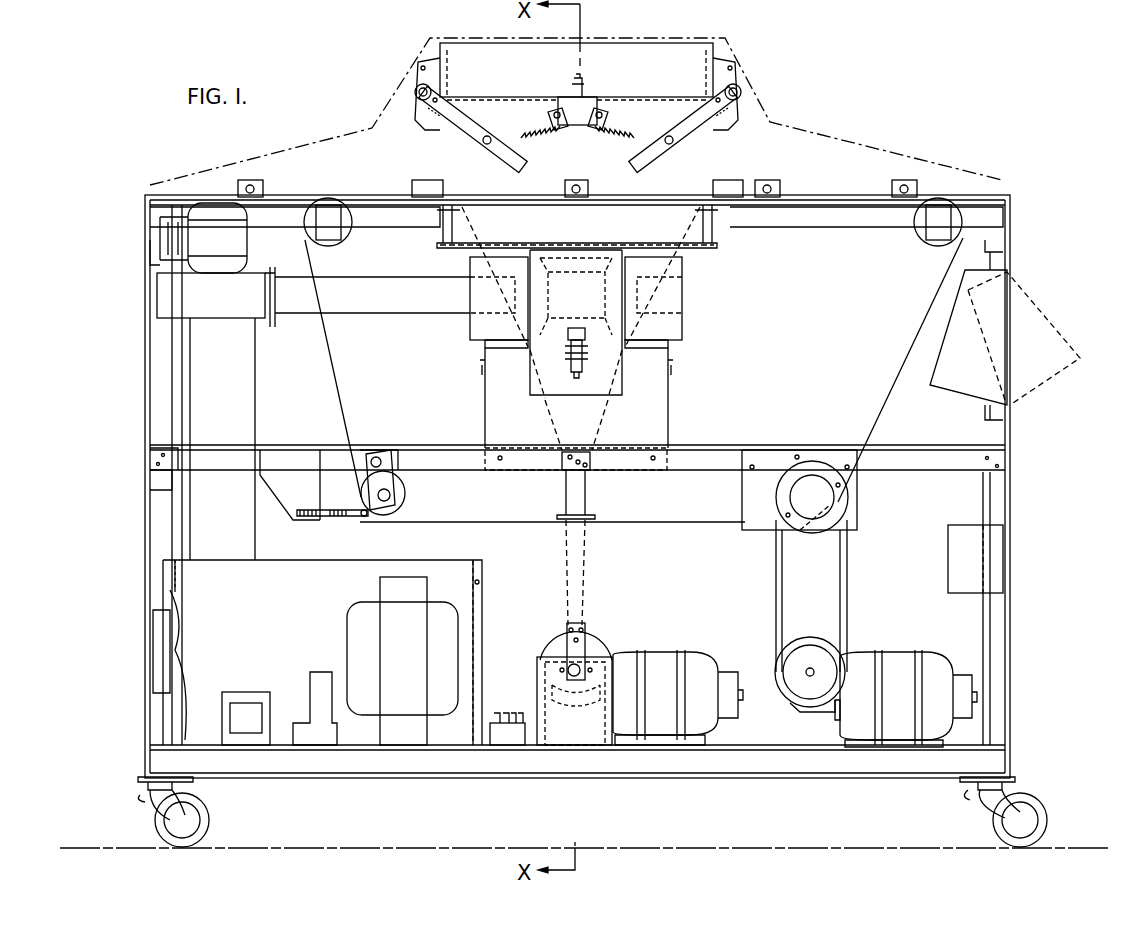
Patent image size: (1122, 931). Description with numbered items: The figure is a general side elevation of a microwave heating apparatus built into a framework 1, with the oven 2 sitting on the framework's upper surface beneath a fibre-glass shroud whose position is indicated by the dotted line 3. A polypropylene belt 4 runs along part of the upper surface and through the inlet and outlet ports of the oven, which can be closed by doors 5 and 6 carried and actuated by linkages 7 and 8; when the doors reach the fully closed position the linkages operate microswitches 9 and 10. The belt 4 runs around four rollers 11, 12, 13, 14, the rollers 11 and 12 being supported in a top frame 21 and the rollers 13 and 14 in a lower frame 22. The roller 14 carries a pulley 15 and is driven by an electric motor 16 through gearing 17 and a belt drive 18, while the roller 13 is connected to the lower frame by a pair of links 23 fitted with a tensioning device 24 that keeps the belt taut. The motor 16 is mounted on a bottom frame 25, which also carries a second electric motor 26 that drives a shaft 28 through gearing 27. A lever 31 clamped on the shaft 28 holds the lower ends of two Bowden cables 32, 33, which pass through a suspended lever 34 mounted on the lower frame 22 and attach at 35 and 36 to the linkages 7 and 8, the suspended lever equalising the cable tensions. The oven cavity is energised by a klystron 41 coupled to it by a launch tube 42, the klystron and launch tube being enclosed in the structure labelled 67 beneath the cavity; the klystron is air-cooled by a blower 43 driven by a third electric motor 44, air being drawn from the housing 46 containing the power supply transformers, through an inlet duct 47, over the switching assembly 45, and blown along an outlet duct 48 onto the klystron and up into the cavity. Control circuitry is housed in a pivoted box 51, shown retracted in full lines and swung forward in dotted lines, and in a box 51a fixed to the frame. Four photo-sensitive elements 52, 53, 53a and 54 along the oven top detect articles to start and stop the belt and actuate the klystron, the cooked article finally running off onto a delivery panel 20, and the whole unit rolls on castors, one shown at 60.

The framework 1 is at (1010, 552).
The oven 2 is at (713, 50).
The dotted line 3 is at (856, 162).
The polypropylene belt 4 is at (864, 202).
The door 5 is at (723, 80).
The door 6 is at (425, 72).
The linkage 7 is at (678, 138).
The linkage 8 is at (478, 138).
The microswitch 9 is at (730, 190).
The microswitch 10 is at (425, 192).
The roller 11 is at (922, 230).
The roller 12 is at (345, 232).
The roller 13 is at (400, 492).
The roller 14 is at (777, 508).
The pulley 15 is at (843, 503).
The electric motor 16 is at (895, 668).
The gearing 17 is at (815, 712).
The belt drive 18 is at (843, 628).
The delivery panel 20 is at (208, 197).
The top frame 21 is at (1008, 215).
The lower frame 22 is at (995, 462).
The links 23 is at (392, 460).
The tensioning device 24 is at (340, 520).
The bottom frame 25 is at (985, 762).
The second electric motor 26 is at (665, 662).
The gearing 27 is at (574, 688).
The shaft 28 is at (570, 667).
The lever 31 is at (587, 632).
The Bowden cable 32 is at (584, 563).
The Bowden cable 33 is at (566, 563).
The suspended lever 34 is at (575, 502).
The attachment point 35 is at (716, 123).
The attachment point 36 is at (440, 123).
The klystron 41 is at (585, 365).
The launch tube 42 is at (625, 388).
The blower 43 is at (183, 297).
The third electric motor 44 is at (210, 243).
The switching assembly 45 is at (505, 733).
The housing 46 is at (475, 606).
The inlet duct 47 is at (218, 400).
The outlet duct 48 is at (363, 307).
The box 51 is at (978, 375).
The box 51a is at (990, 572).
The photo-sensitive element 52 is at (917, 192).
The photo-sensitive element 53 is at (780, 188).
The photo-sensitive element 53a is at (575, 180).
The photo-sensitive element 54 is at (265, 190).
The castor 60 is at (1040, 812).
The housing 67 is at (640, 398).